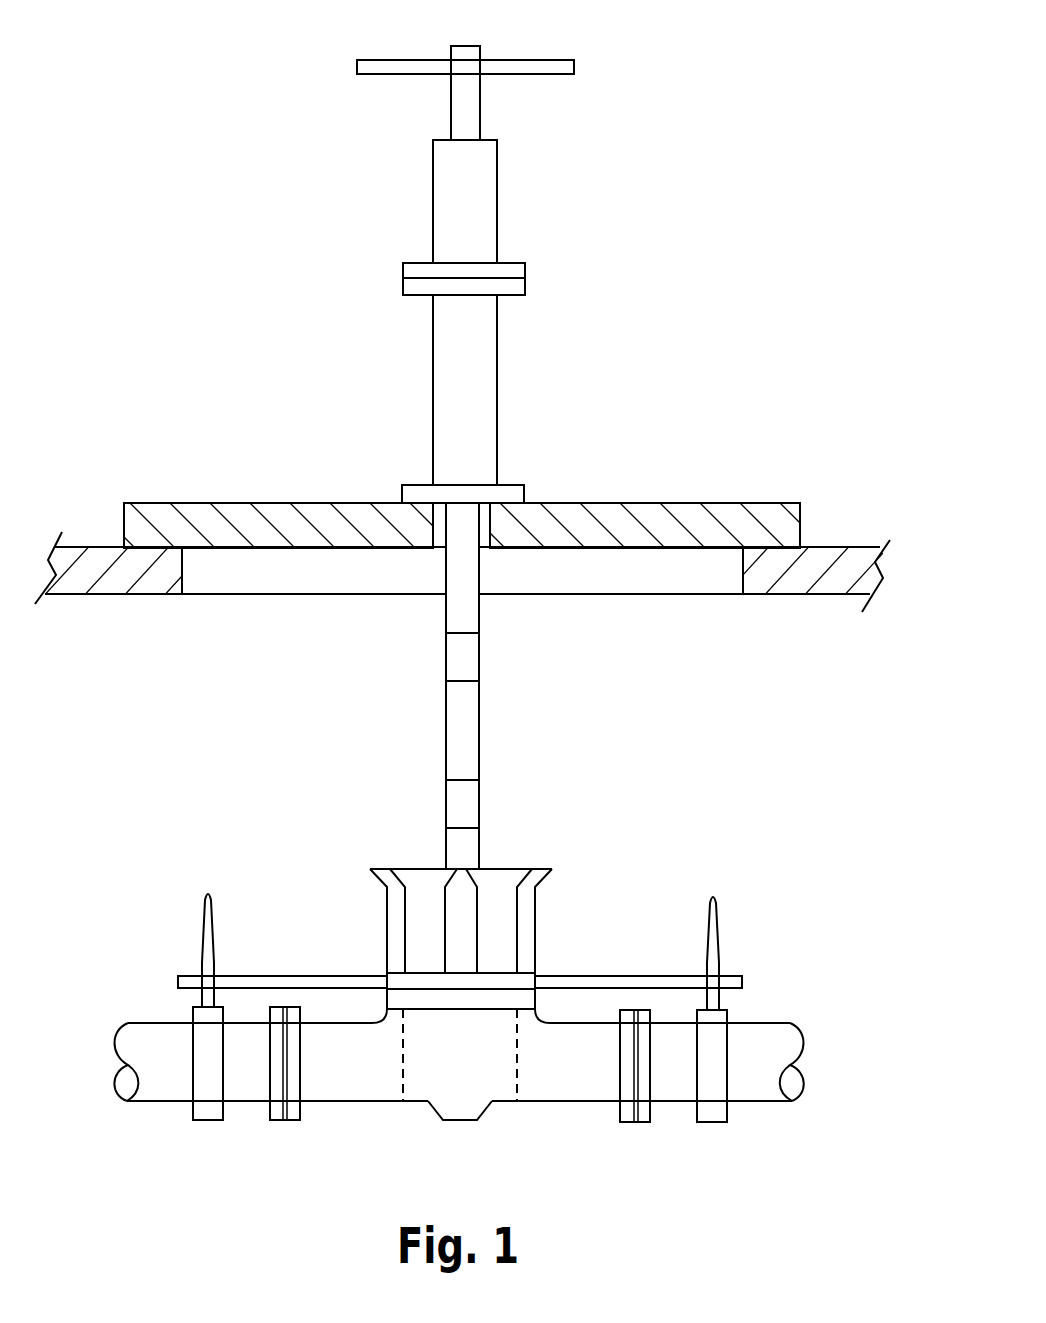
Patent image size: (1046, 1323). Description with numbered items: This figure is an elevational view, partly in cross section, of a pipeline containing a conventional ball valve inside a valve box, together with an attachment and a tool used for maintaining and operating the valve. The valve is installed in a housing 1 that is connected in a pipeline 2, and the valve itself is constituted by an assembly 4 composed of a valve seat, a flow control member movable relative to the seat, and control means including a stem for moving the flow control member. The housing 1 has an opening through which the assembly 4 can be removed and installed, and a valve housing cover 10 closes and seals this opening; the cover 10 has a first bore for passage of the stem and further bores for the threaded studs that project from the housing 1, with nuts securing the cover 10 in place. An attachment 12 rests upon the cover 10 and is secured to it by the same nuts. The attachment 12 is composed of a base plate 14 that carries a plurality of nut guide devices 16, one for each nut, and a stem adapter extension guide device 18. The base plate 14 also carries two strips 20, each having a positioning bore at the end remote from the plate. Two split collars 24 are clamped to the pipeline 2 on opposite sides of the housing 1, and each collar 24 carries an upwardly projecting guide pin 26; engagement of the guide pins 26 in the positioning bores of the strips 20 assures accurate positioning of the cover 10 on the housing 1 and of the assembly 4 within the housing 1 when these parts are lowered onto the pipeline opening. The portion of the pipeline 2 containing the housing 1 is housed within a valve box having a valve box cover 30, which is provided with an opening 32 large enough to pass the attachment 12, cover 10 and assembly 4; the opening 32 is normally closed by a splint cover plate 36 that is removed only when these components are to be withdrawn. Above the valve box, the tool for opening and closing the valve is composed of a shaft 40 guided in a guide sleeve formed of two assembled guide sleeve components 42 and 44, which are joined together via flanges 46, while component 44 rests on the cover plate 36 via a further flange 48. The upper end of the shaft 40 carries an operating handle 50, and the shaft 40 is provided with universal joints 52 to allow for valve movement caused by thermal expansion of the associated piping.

The housing 1 is at (570, 1087).
The pipeline 2 is at (240, 1087).
The assembly 4 is at (473, 1080).
The valve housing cover 10 is at (512, 1002).
The attachment 12 is at (283, 839).
The base plate 14 is at (512, 983).
The nut guide devices 16 is at (503, 878).
The stem adapter extension guide device 18 is at (457, 892).
The strips 20 is at (292, 980).
The split collars 24 is at (202, 1093).
The guide pin 26 is at (207, 938).
The valve box cover 30 is at (813, 562).
The opening 32 is at (262, 572).
The splint cover plate 36 is at (730, 513).
The shaft 40 is at (473, 114).
The guide sleeve component 42 is at (483, 208).
The guide sleeve component 44 is at (483, 380).
The flanges 46 is at (517, 270).
The flange 48 is at (507, 495).
The operating handle 50 is at (547, 65).
The universal joints 52 is at (470, 658).